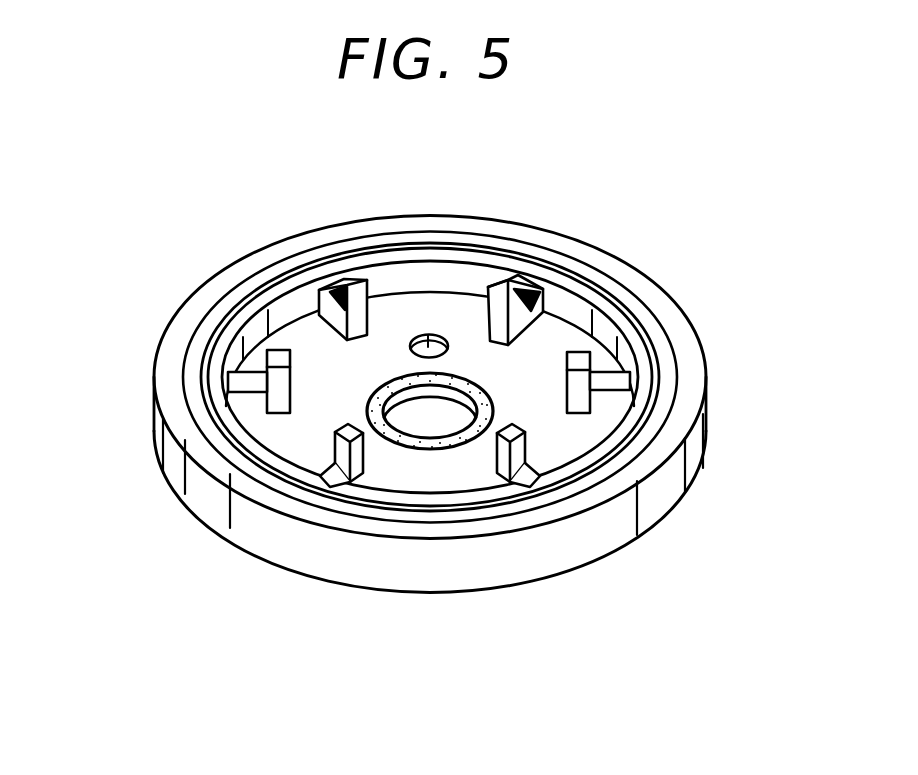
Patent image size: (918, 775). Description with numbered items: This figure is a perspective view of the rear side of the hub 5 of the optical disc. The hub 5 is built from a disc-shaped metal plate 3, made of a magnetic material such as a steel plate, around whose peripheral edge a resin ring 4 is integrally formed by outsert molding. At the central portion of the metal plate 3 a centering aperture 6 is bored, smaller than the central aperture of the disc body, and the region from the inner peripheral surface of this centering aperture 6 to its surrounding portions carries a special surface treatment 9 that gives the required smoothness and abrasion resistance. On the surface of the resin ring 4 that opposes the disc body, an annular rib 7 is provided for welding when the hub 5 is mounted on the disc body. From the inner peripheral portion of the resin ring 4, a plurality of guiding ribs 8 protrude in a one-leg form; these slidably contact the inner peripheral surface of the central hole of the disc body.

The metal plate 3 is at (431, 334).
The resin ring 4 is at (660, 503).
The hub 5 is at (608, 553).
The centering aperture 6 is at (427, 442).
The annular rib 7 is at (192, 347).
The guiding ribs 8 is at (580, 353).
The special surface treatment 9 is at (492, 402).